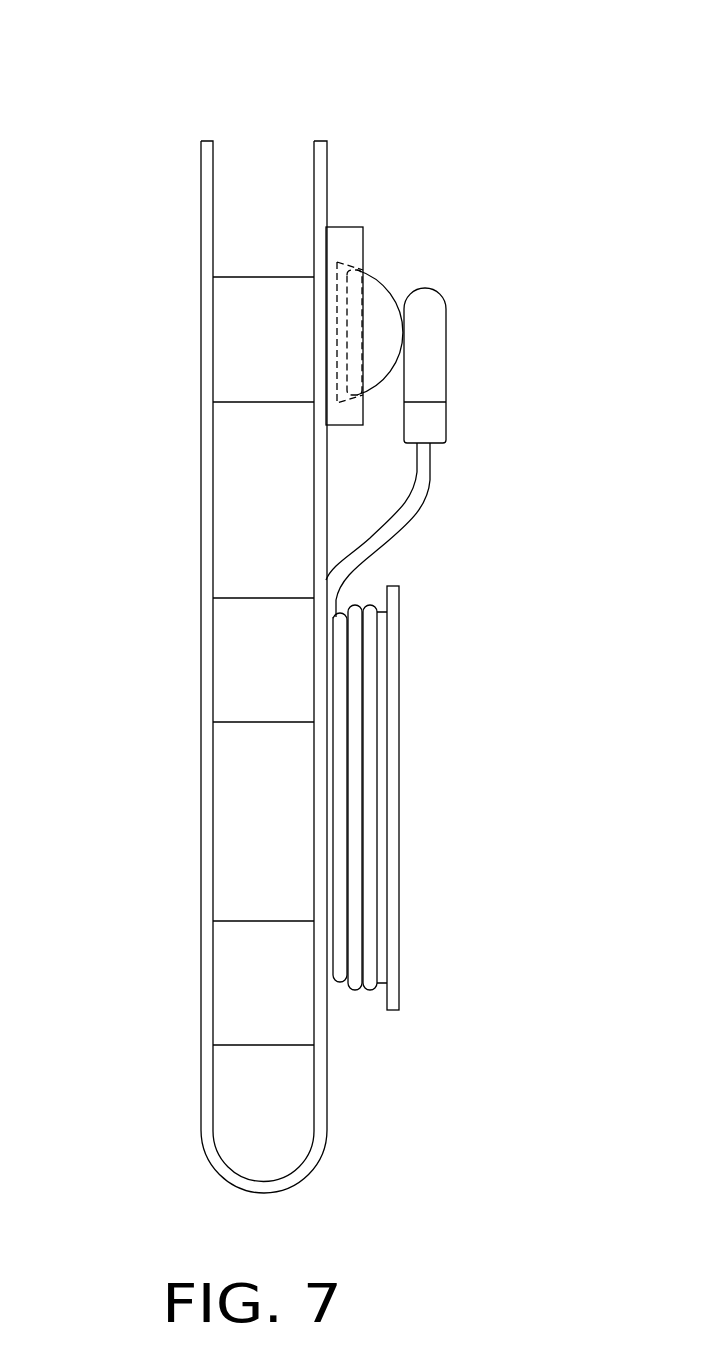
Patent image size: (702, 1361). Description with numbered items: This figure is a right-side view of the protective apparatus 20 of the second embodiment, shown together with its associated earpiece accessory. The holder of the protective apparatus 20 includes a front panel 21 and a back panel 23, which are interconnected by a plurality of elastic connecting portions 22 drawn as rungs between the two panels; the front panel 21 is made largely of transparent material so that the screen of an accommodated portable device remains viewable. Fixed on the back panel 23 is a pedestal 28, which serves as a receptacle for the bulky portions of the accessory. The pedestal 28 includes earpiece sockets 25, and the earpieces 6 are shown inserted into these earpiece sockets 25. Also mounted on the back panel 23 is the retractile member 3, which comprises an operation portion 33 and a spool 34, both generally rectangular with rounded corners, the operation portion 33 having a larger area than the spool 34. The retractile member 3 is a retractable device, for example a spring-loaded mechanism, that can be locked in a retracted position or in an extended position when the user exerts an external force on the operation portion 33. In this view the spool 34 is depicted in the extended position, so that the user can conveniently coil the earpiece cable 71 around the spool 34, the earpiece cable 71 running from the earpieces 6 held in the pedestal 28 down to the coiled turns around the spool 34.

The protective apparatus 20 is at (292, 31).
The front panel 21 is at (209, 202).
The elastic connecting portions 22 is at (263, 677).
The back panel 23 is at (318, 1080).
The earpiece sockets 25 is at (338, 313).
The pedestal 28 is at (352, 247).
The earpieces 6 is at (462, 354).
The earpiece cable 71 is at (405, 506).
The retractile member 3 is at (494, 769).
The operation portion 33 is at (394, 805).
The spool 34 is at (378, 966).